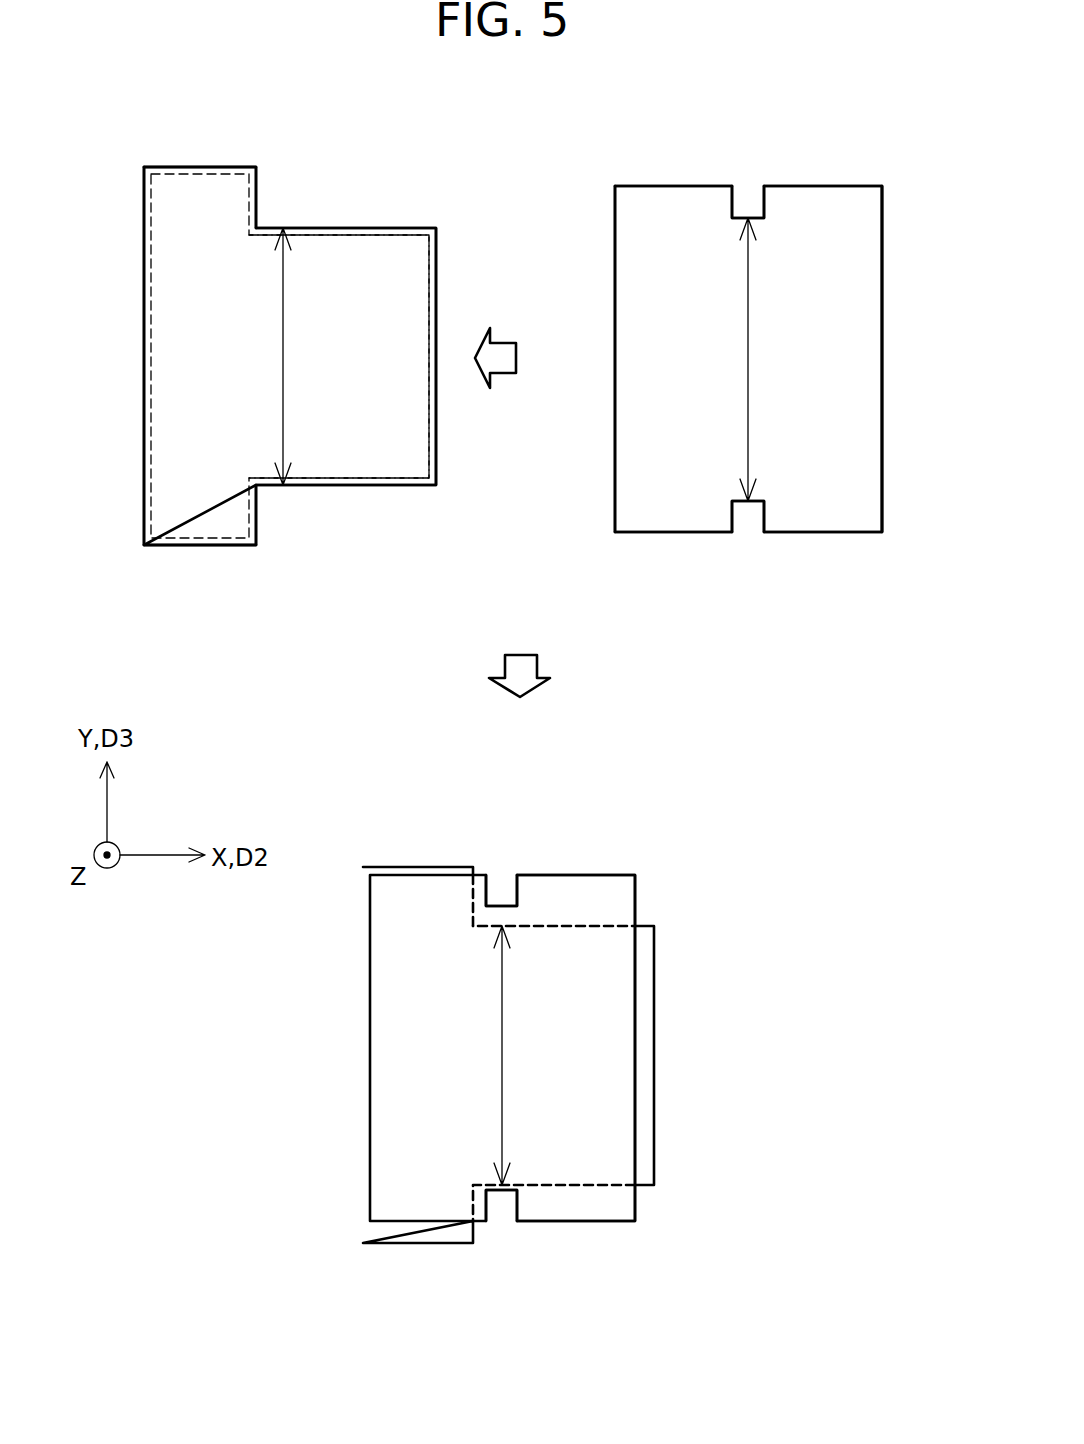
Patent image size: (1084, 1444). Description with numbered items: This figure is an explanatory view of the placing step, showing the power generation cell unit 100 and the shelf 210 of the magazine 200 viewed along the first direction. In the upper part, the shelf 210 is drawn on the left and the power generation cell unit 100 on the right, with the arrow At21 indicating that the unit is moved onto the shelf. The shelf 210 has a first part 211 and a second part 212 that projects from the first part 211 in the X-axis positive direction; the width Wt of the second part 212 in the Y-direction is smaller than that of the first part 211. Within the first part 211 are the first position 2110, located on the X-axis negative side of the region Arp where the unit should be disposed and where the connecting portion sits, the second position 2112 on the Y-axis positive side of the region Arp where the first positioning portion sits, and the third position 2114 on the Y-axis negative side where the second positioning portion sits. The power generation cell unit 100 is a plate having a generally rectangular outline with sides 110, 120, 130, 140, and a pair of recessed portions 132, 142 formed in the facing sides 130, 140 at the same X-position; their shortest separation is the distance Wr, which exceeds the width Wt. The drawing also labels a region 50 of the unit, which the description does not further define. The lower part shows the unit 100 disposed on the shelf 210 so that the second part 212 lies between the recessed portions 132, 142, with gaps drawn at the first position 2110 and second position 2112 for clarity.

The joint region 50 is at (833, 295).
The power generation cell unit 100 is at (848, 166).
The side 110 is at (615, 210).
The side 120 is at (882, 358).
The side 130 is at (645, 532).
The recessed portion 132 is at (747, 507).
The side 140 is at (645, 185).
The recessed portion 142 is at (747, 208).
The magazine 200 is at (360, 1078).
The shelf 210 is at (355, 158).
The first part 211 is at (175, 353).
The second part 212 is at (408, 453).
The first position 2110 is at (143, 212).
The second position 2112 is at (163, 166).
The third position 2114 is at (198, 547).
The region Arp is at (316, 250).
The arrow At21 is at (512, 342).
The width Wt is at (410, 706).
The distance Wr is at (766, 359).